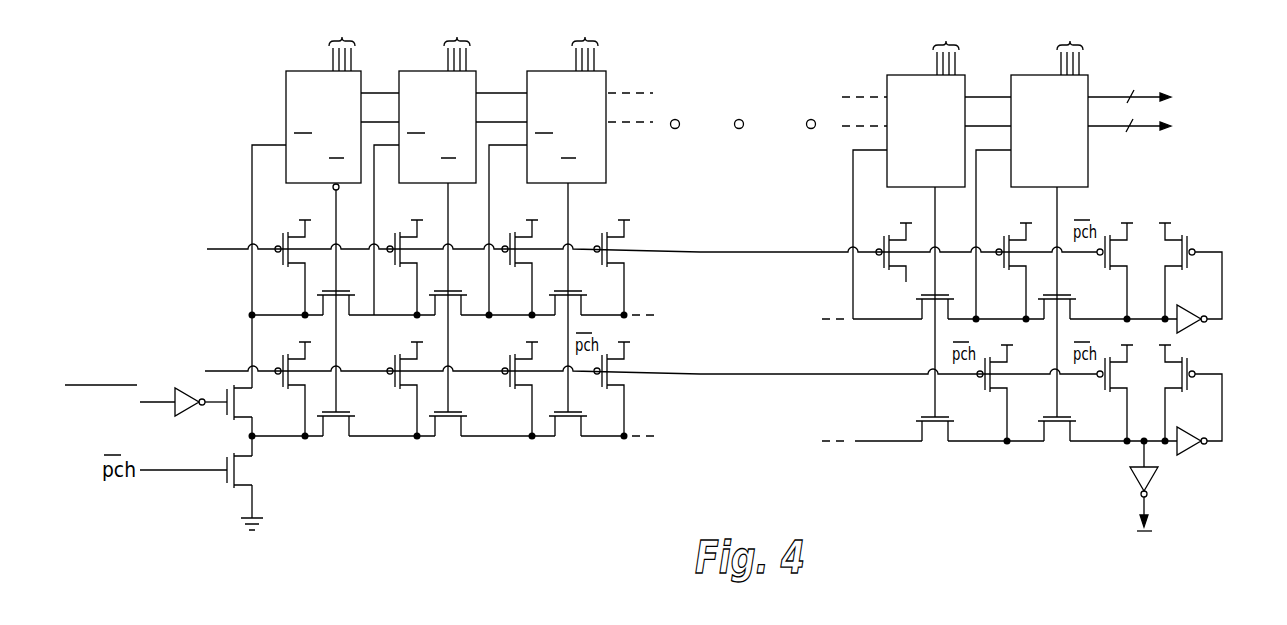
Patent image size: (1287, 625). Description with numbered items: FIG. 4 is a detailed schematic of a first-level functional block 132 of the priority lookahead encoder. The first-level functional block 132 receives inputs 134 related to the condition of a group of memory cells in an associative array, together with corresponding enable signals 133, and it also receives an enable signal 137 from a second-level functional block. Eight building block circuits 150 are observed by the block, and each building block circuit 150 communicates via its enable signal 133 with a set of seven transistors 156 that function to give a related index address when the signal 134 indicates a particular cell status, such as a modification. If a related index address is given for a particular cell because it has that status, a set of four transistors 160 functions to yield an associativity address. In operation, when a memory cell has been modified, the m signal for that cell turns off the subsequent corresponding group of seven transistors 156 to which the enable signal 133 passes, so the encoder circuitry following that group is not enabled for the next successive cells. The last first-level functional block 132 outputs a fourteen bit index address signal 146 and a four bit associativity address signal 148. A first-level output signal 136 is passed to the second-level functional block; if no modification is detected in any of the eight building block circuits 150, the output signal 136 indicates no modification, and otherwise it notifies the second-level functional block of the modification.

The Level 1 functional block 132 is at (403, 463).
The enable signal 133 is at (518, 204).
The inputs 134 is at (701, 45).
The Level 1 output signal 136 is at (1148, 510).
The enable signal 137 is at (156, 399).
The index address signal 146 is at (1099, 96).
The associativity address signal 148 is at (1099, 127).
The building block circuit 150 is at (581, 108).
The set of seven transistors 156 is at (834, 284).
The set of four transistors 160 is at (893, 417).